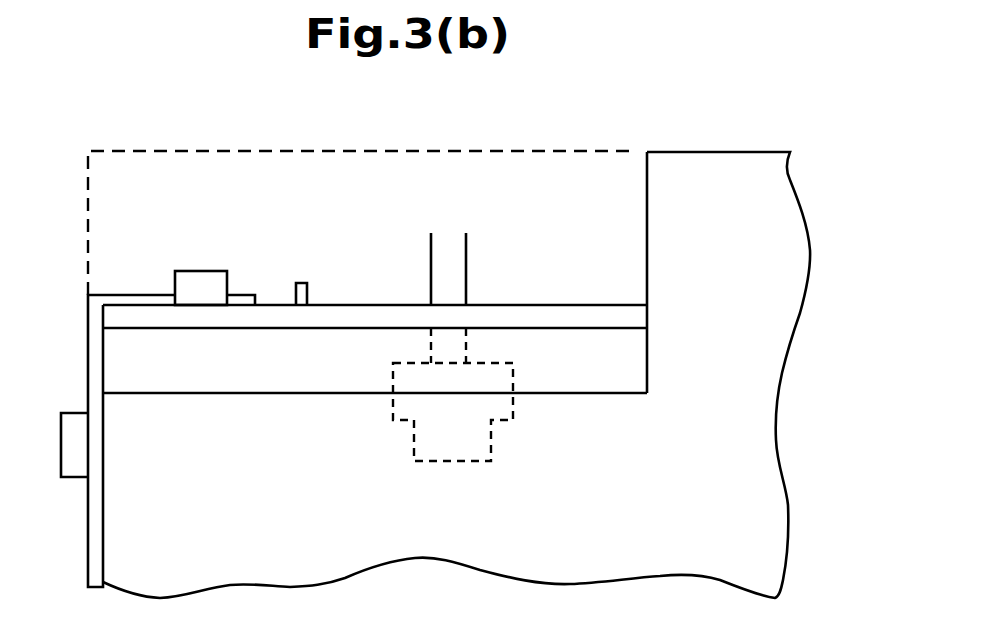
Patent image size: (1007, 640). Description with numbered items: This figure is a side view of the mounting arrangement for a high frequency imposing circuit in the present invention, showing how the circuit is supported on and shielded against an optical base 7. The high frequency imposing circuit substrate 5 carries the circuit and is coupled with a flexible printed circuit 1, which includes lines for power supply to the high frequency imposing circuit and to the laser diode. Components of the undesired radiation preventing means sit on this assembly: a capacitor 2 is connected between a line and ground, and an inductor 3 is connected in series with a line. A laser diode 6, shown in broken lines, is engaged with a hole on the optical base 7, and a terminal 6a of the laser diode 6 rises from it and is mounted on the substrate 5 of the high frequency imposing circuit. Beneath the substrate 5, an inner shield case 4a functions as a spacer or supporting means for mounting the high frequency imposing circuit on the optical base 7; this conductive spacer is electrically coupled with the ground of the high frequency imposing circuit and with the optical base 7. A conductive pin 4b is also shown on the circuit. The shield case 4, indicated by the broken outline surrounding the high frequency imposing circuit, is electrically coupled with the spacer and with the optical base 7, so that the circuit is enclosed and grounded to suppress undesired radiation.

The flexible printed circuit 1 is at (130, 294).
The capacitor 2 is at (205, 283).
The inductor 3 is at (61, 421).
The shield case 4 is at (590, 148).
The inner shield case 4a is at (627, 360).
The conductive pin 4b is at (303, 283).
The high frequency imposing circuit substrate 5 is at (578, 312).
The laser diode 6 is at (508, 378).
The terminal of the laser diode 6a is at (469, 226).
The optical base 7 is at (790, 275).